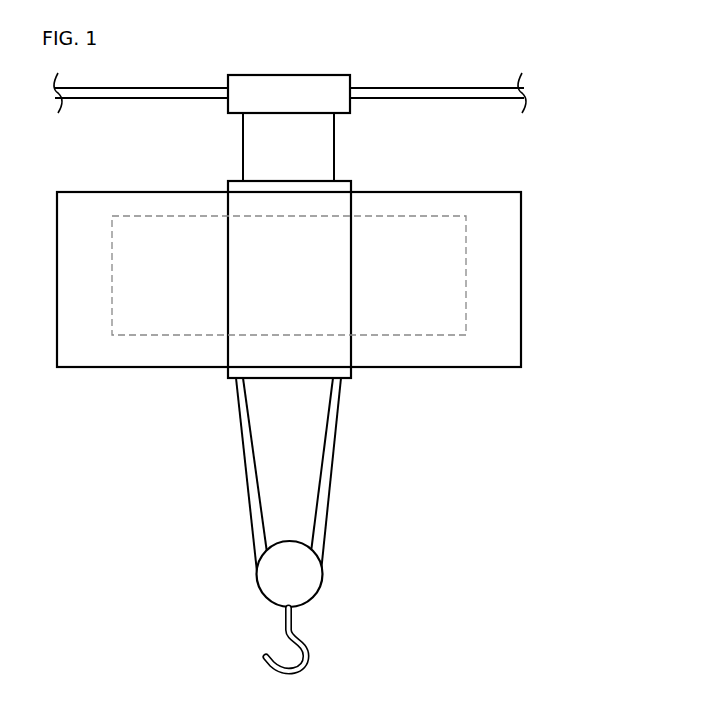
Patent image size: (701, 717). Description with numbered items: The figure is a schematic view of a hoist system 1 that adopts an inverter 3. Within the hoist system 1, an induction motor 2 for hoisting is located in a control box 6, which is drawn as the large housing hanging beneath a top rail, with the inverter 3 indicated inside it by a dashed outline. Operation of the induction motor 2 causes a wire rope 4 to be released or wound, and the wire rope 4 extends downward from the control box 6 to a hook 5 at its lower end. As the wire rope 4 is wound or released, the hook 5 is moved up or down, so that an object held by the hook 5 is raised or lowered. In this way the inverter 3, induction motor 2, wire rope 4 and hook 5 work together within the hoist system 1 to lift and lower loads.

The hoist system 1 is at (567, 176).
The induction motor 2 is at (147, 315).
The inverter 3 is at (445, 262).
The wire rope 4 is at (330, 457).
The hook 5 is at (305, 577).
The control box 6 is at (497, 306).